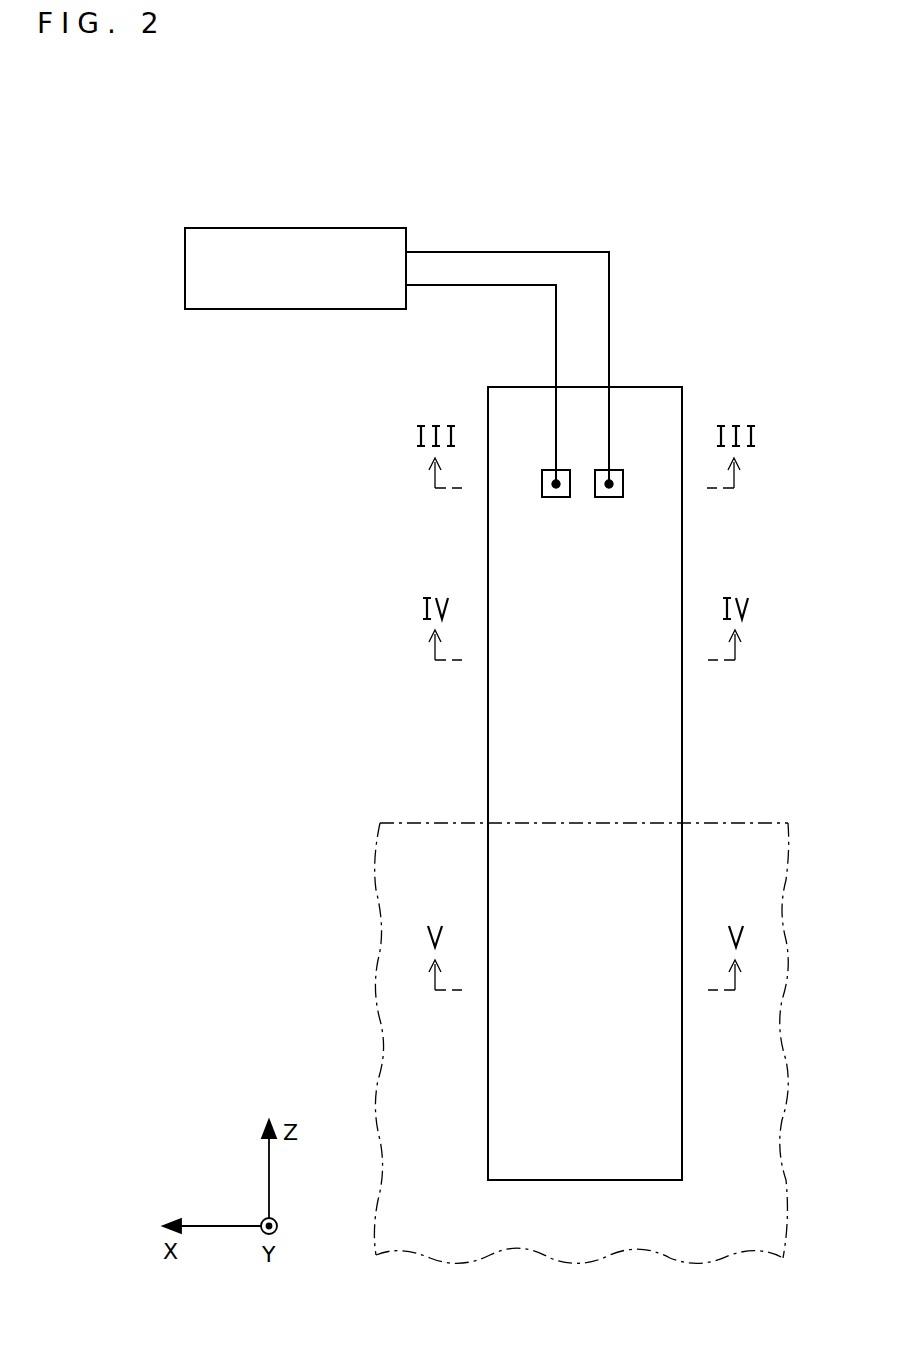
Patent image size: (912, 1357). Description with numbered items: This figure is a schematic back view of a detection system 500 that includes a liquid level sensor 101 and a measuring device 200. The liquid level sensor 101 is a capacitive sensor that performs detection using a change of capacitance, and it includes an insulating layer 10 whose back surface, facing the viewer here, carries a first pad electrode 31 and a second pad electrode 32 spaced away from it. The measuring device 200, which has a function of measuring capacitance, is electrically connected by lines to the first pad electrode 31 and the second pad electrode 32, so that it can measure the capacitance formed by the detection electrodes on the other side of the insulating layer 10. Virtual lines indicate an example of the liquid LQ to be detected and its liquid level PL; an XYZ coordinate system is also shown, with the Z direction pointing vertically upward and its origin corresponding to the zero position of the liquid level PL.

The detection system 500 is at (196, 153).
The measuring device 200 is at (275, 228).
The liquid level sensor 101 is at (466, 381).
The insulating layer 10 is at (525, 406).
The first pad electrode 31 is at (615, 470).
The second pad electrode 32 is at (562, 470).
The liquid LQ is at (407, 870).
The liquid level PL is at (433, 822).